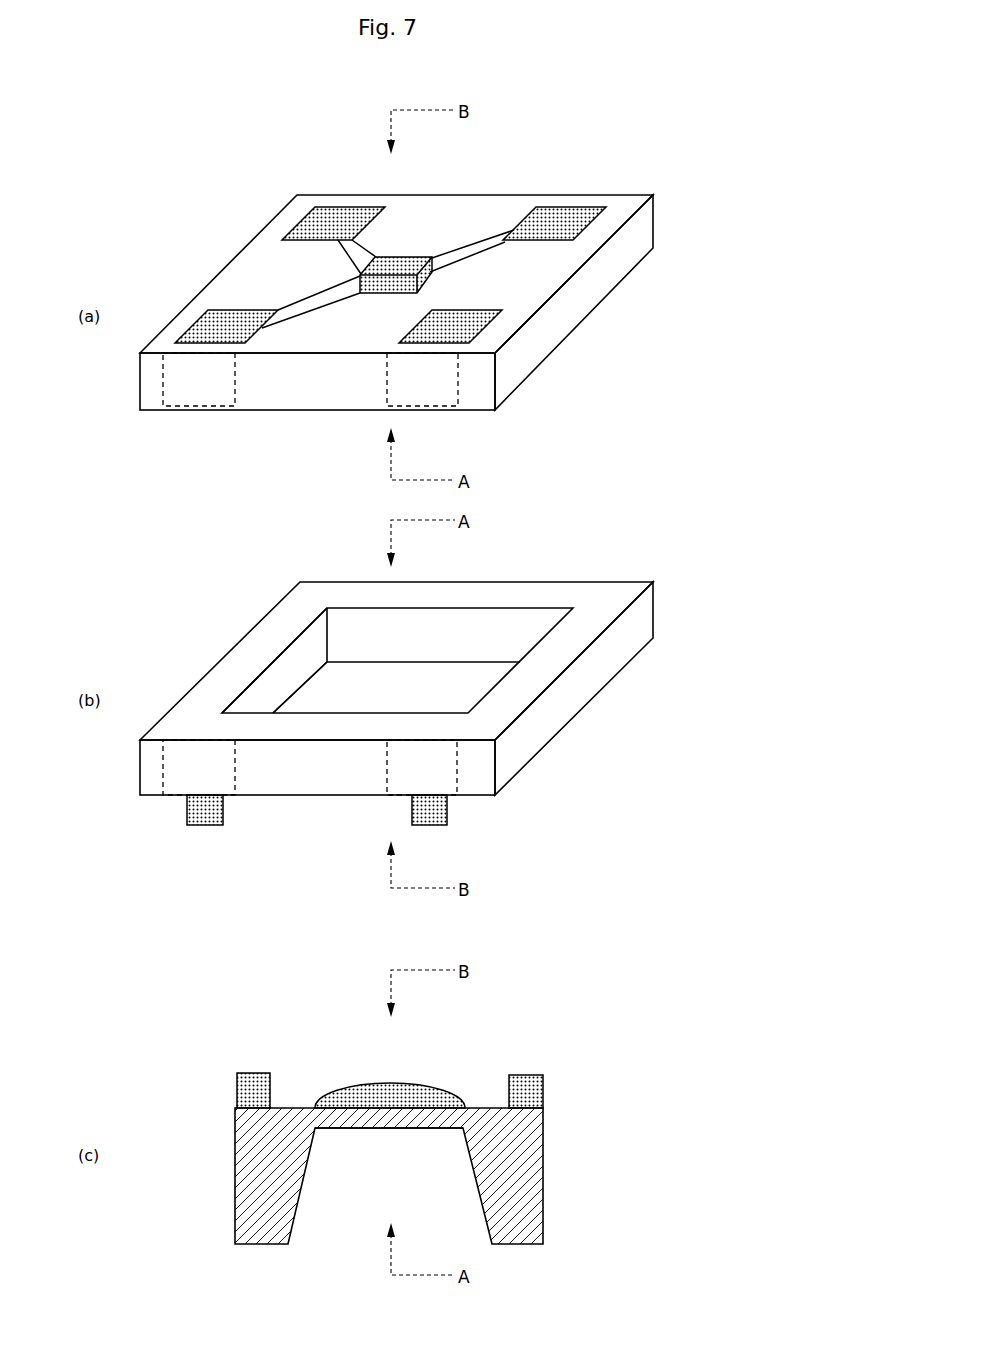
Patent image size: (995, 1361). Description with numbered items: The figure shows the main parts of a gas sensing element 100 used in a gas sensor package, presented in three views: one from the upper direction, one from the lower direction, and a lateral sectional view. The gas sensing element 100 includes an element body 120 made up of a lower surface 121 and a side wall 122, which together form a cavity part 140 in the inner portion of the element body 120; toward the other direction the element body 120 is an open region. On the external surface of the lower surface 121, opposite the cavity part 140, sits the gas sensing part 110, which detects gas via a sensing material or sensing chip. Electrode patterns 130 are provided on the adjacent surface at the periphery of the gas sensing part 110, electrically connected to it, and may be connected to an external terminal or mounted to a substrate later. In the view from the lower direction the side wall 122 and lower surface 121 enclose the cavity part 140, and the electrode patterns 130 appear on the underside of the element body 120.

The gas sensing element 100 is at (575, 153).
The gas sensing part 110 is at (398, 257).
The element body 120 is at (563, 318).
The lower surface 121 is at (480, 676).
The side wall 122 is at (518, 736).
The electrode patterns 130 is at (588, 218).
The cavity part 140 is at (332, 673).